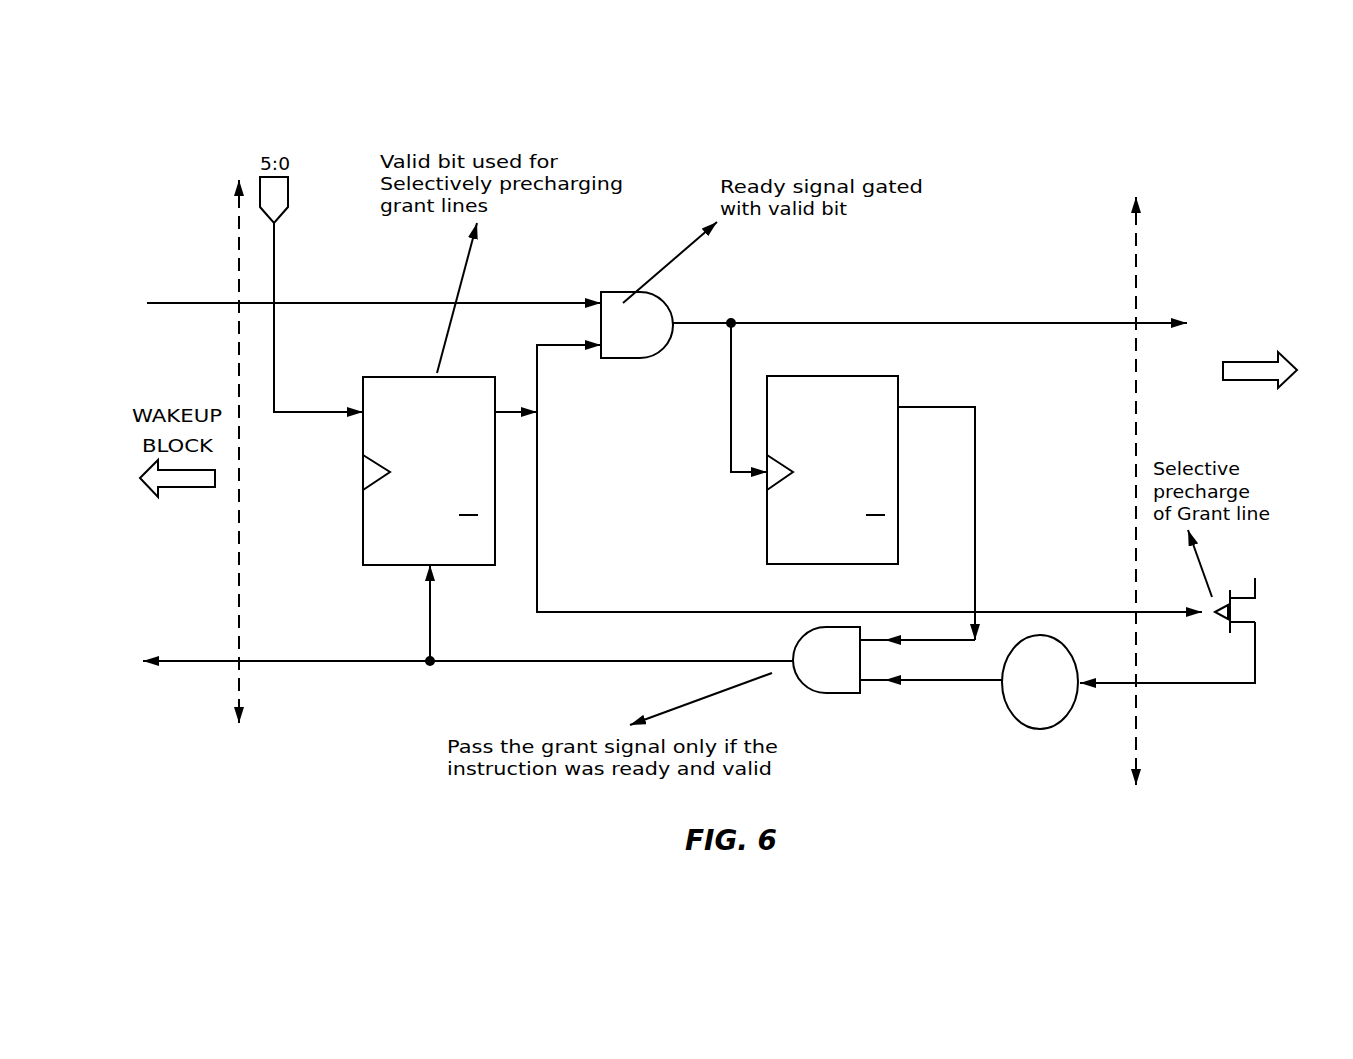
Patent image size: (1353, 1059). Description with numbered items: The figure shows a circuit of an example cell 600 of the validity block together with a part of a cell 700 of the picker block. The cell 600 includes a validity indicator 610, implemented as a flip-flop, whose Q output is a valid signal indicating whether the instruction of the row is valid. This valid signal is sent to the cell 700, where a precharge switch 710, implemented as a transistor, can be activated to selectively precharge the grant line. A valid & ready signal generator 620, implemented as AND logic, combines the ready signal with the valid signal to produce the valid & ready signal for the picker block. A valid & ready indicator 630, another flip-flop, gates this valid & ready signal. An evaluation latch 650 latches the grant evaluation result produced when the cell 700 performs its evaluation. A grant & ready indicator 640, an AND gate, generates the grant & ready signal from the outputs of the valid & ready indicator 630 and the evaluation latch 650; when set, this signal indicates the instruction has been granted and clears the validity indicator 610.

The cell 600 is at (720, 135).
The validity indicator 610 is at (398, 565).
The valid & ready signal generator 620 is at (623, 358).
The valid & ready indicator 630 is at (828, 375).
The grant & ready indicator 640 is at (793, 645).
The evaluation latch 650 is at (1067, 643).
The cell 700 is at (1205, 160).
The precharge switch 710 is at (1230, 630).